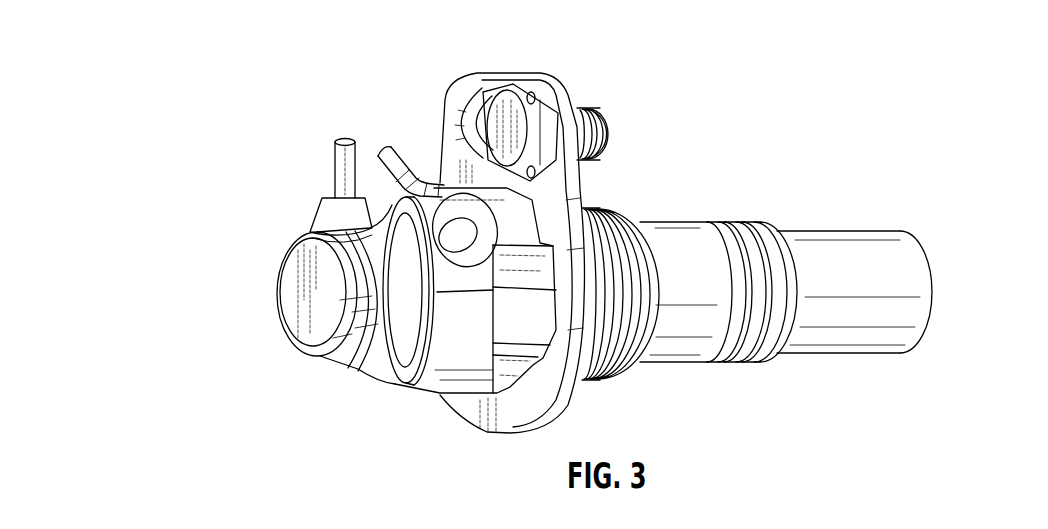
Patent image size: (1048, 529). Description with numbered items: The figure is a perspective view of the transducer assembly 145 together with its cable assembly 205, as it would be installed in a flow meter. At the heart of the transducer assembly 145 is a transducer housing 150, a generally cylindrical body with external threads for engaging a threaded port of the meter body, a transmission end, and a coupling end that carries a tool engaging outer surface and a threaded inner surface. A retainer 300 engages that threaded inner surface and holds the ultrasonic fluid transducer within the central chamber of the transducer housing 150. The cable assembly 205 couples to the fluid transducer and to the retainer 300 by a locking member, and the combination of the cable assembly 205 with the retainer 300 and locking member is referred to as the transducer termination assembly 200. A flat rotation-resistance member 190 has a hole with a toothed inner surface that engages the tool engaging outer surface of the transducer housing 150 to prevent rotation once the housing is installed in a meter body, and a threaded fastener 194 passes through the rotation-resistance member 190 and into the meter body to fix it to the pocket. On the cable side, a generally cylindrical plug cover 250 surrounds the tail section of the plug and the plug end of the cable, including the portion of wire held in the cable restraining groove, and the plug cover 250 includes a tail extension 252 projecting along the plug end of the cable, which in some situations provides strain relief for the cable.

The transducer assembly 145 is at (213, 247).
The transducer housing 150 is at (922, 265).
The rotation-resistance member 190 is at (580, 195).
The threaded fastener 194 is at (612, 132).
The transducer termination assembly 200 is at (337, 415).
The cable assembly 205 is at (355, 90).
The plug cover 250 is at (285, 295).
The tail extension 252 is at (330, 217).
The retainer 300 is at (407, 383).